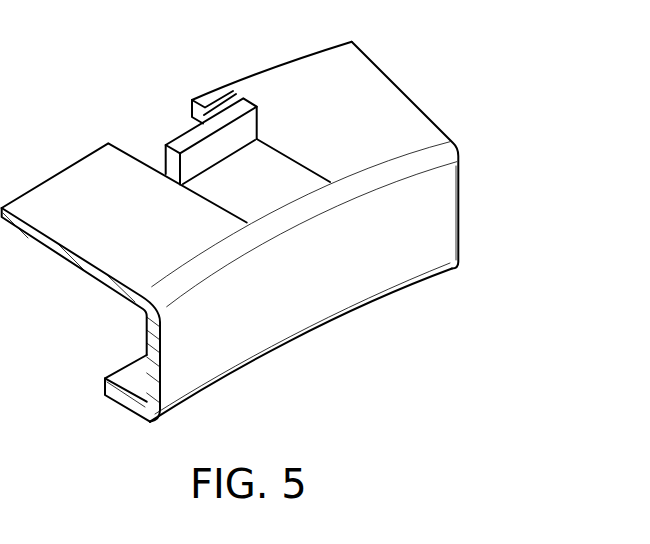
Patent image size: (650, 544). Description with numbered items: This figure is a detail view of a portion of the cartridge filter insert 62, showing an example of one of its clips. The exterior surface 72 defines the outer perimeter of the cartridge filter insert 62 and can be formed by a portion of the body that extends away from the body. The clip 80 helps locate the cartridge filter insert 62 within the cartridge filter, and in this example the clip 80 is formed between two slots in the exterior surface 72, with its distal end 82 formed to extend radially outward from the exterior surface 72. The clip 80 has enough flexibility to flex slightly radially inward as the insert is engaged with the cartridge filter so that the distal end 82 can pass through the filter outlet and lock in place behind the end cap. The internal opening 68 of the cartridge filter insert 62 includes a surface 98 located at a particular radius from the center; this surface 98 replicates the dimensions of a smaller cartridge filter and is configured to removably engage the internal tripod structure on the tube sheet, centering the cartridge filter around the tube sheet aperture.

The cartridge filter insert 62 is at (298, 267).
The internal opening 68 is at (137, 463).
The exterior surface 72 is at (372, 89).
The clip 80 is at (173, 140).
The distal end 82 is at (231, 111).
The surface 98 is at (117, 405).